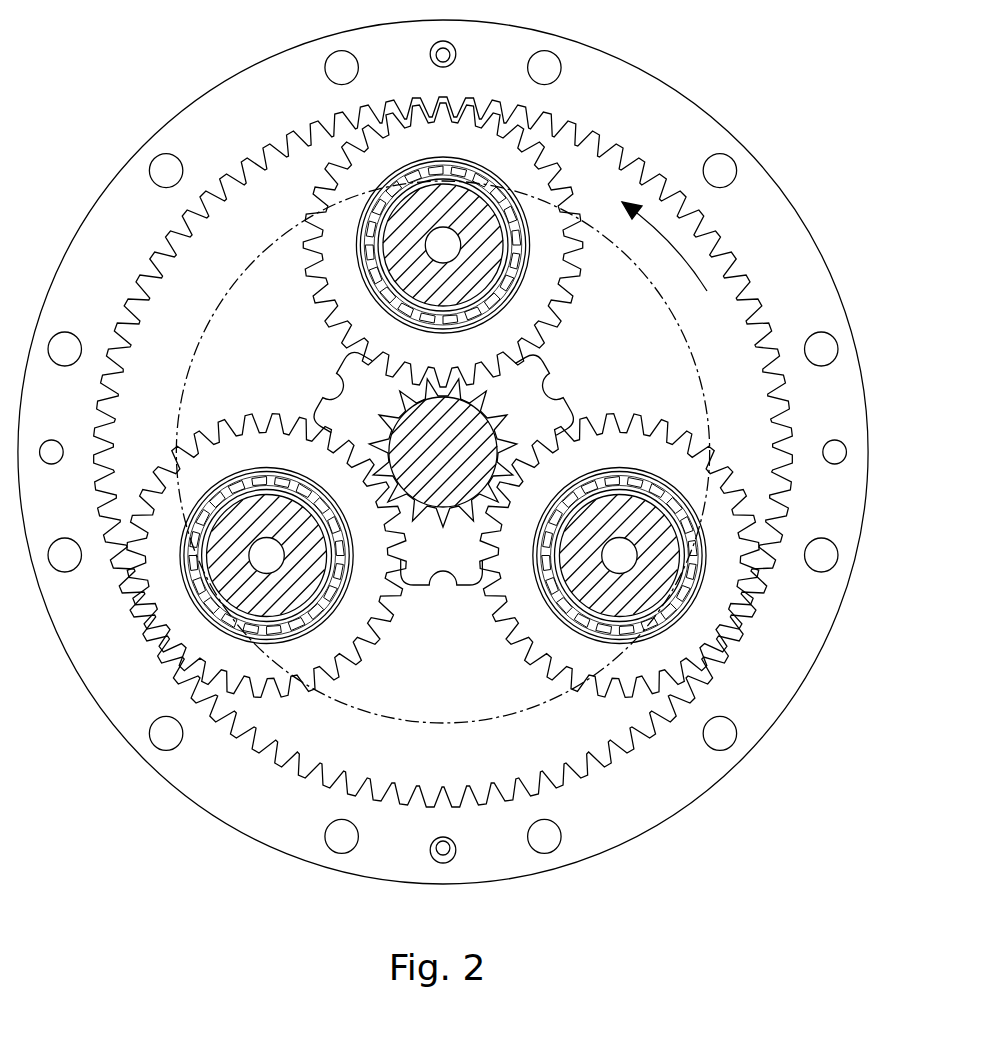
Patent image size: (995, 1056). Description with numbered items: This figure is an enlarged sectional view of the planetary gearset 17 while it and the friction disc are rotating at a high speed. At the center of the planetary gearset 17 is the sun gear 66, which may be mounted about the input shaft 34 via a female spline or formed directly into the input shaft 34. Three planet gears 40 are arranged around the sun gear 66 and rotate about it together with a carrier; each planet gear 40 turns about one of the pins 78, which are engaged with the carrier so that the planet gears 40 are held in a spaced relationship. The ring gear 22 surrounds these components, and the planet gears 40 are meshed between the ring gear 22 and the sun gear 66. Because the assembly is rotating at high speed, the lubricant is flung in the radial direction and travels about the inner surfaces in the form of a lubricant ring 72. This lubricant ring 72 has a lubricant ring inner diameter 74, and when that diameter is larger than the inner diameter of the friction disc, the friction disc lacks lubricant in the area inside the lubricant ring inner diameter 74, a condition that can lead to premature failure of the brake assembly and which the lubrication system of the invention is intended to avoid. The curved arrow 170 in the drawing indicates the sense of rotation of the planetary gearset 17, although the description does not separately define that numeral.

The ring gear 22 is at (647, 73).
The planetary gearset 17 is at (818, 212).
The direction of rotation 170 is at (692, 268).
The lubricant ring 72 is at (257, 187).
The lubricant ring inner diameter 74 is at (185, 337).
The pins 78 is at (621, 554).
The planet gears 40 is at (530, 625).
The input shaft 34 is at (495, 448).
The sun gear 66 is at (493, 393).